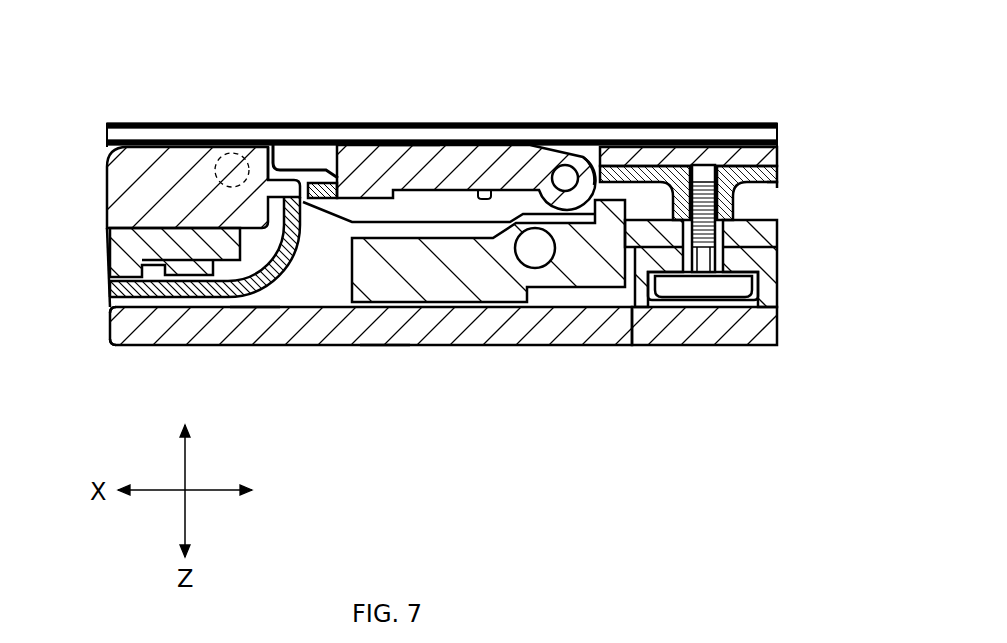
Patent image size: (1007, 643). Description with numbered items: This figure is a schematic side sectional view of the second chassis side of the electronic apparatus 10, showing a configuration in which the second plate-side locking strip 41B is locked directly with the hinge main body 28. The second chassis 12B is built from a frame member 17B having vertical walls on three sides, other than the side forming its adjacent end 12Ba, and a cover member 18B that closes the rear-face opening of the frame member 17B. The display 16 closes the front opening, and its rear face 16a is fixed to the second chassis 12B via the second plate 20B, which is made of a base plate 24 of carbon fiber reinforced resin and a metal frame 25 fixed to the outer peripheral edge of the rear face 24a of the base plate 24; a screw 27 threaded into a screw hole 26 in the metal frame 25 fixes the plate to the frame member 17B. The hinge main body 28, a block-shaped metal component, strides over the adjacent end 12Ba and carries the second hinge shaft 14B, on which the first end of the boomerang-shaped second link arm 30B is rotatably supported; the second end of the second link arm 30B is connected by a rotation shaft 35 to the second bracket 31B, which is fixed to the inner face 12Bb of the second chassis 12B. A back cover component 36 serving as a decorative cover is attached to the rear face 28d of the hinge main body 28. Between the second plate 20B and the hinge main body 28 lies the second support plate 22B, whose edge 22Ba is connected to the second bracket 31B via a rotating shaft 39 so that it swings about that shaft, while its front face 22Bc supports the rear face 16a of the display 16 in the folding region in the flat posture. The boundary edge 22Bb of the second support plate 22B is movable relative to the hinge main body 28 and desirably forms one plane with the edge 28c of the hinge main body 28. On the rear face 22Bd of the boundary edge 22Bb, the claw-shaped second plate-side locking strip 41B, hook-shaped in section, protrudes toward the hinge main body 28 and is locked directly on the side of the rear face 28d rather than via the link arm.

The electronic apparatus 10 is at (73, 36).
The display 16 is at (121, 124).
The rear face 16a is at (108, 148).
The hinge main body 28 is at (203, 154).
The edge 28c is at (263, 148).
The rear face 28d is at (300, 200).
The second hinge shaft 14B is at (230, 153).
The boundary edge 22Bb is at (296, 150).
The second plate-side locking strip 41B is at (322, 185).
The second support plate 22B is at (491, 122).
The front face 22Bc is at (408, 146).
The rear face 22Bd is at (490, 190).
The edge 22Ba is at (590, 148).
The rotating shaft 39 is at (567, 170).
The screw holes 26 is at (692, 165).
The second plate 20B is at (717, 128).
The base plate 24 is at (717, 149).
The rear face 24a is at (778, 186).
The metal frame 25 is at (752, 147).
The back cover component 36 is at (198, 290).
The second link arm 30B is at (352, 218).
The second bracket 31B is at (488, 307).
The rotation shaft 35 is at (540, 258).
The screw 27 is at (742, 292).
The cover member 18B is at (701, 315).
The second chassis 12B is at (349, 342).
The adjacent end 12Ba is at (108, 330).
The inner face 12Bb is at (255, 308).
The frame member 17B is at (382, 336).